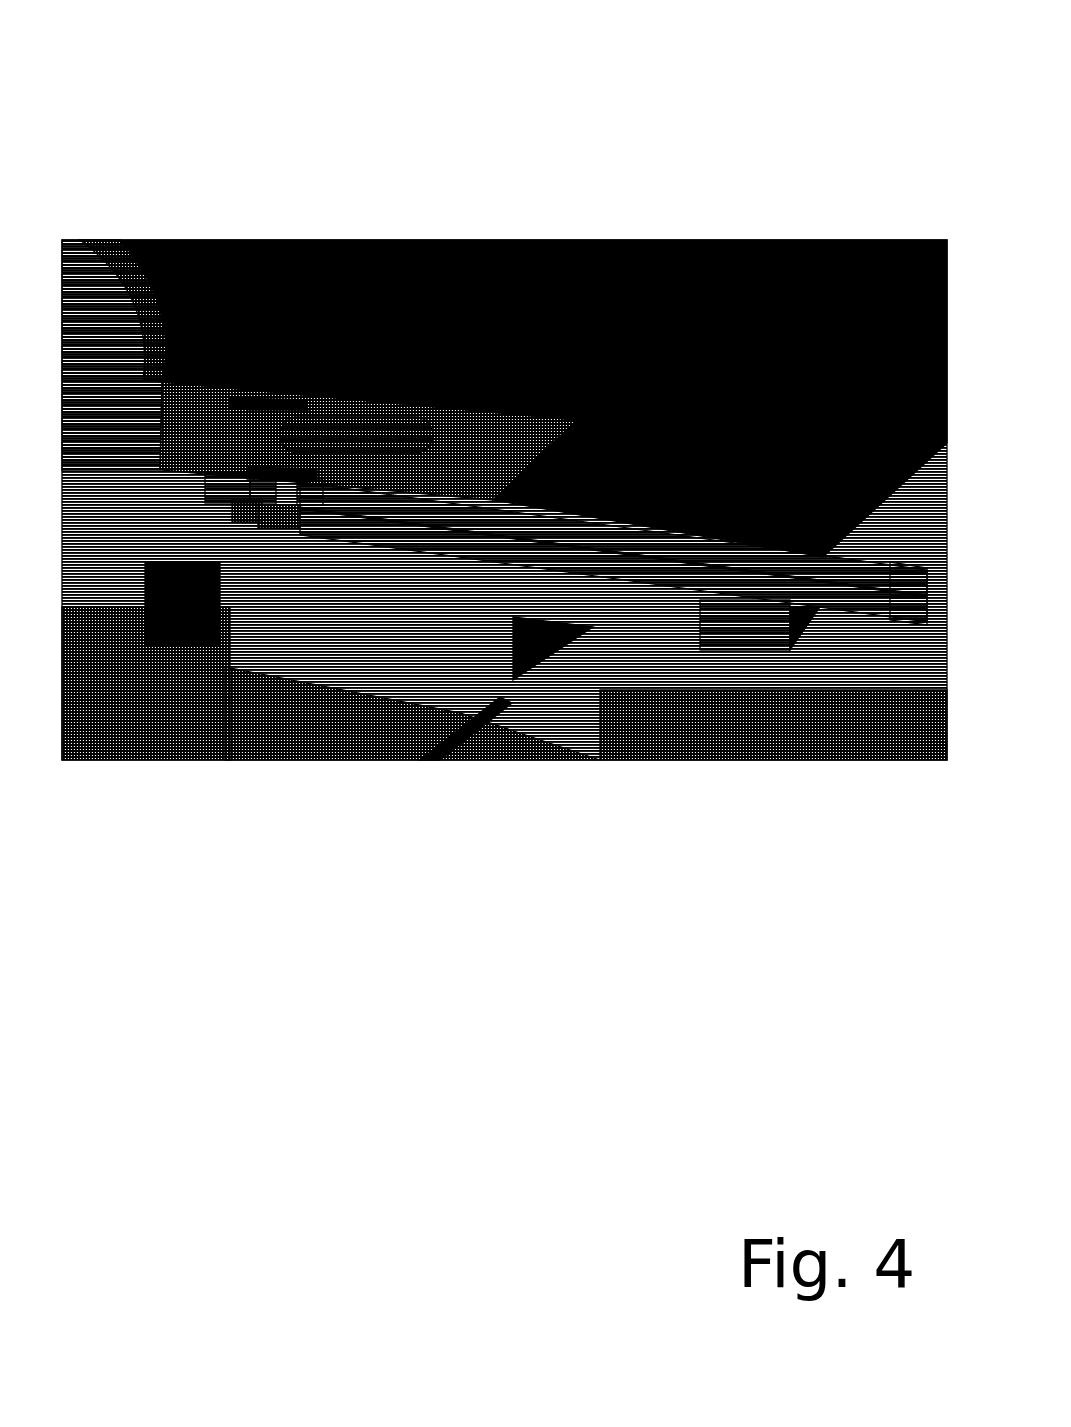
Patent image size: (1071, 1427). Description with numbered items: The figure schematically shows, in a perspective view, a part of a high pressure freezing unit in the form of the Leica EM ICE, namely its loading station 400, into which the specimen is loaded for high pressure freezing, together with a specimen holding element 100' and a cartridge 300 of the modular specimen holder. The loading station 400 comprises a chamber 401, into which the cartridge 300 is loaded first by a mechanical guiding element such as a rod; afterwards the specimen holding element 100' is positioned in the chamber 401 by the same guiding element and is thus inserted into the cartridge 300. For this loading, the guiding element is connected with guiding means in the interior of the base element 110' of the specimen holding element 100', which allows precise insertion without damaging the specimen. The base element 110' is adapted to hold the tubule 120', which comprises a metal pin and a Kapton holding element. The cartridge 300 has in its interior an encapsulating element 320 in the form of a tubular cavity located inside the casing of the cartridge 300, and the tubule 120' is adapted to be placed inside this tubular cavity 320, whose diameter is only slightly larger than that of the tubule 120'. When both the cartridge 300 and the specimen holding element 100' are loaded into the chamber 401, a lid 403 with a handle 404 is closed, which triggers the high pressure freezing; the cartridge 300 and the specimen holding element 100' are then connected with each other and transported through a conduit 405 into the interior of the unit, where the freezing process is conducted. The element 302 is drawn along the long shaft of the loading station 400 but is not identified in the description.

The conduit 405 is at (132, 477).
The chamber 401 is at (212, 445).
The lid 403 is at (262, 408).
The handle 404 is at (368, 437).
The loading station 400 is at (458, 405).
The cartridge 300 is at (222, 502).
The encapsulating element 320 is at (242, 502).
The tubule 120' is at (240, 678).
The specimen holding element 100' is at (308, 743).
The base element 110' is at (371, 697).
The shaft 302 is at (729, 565).